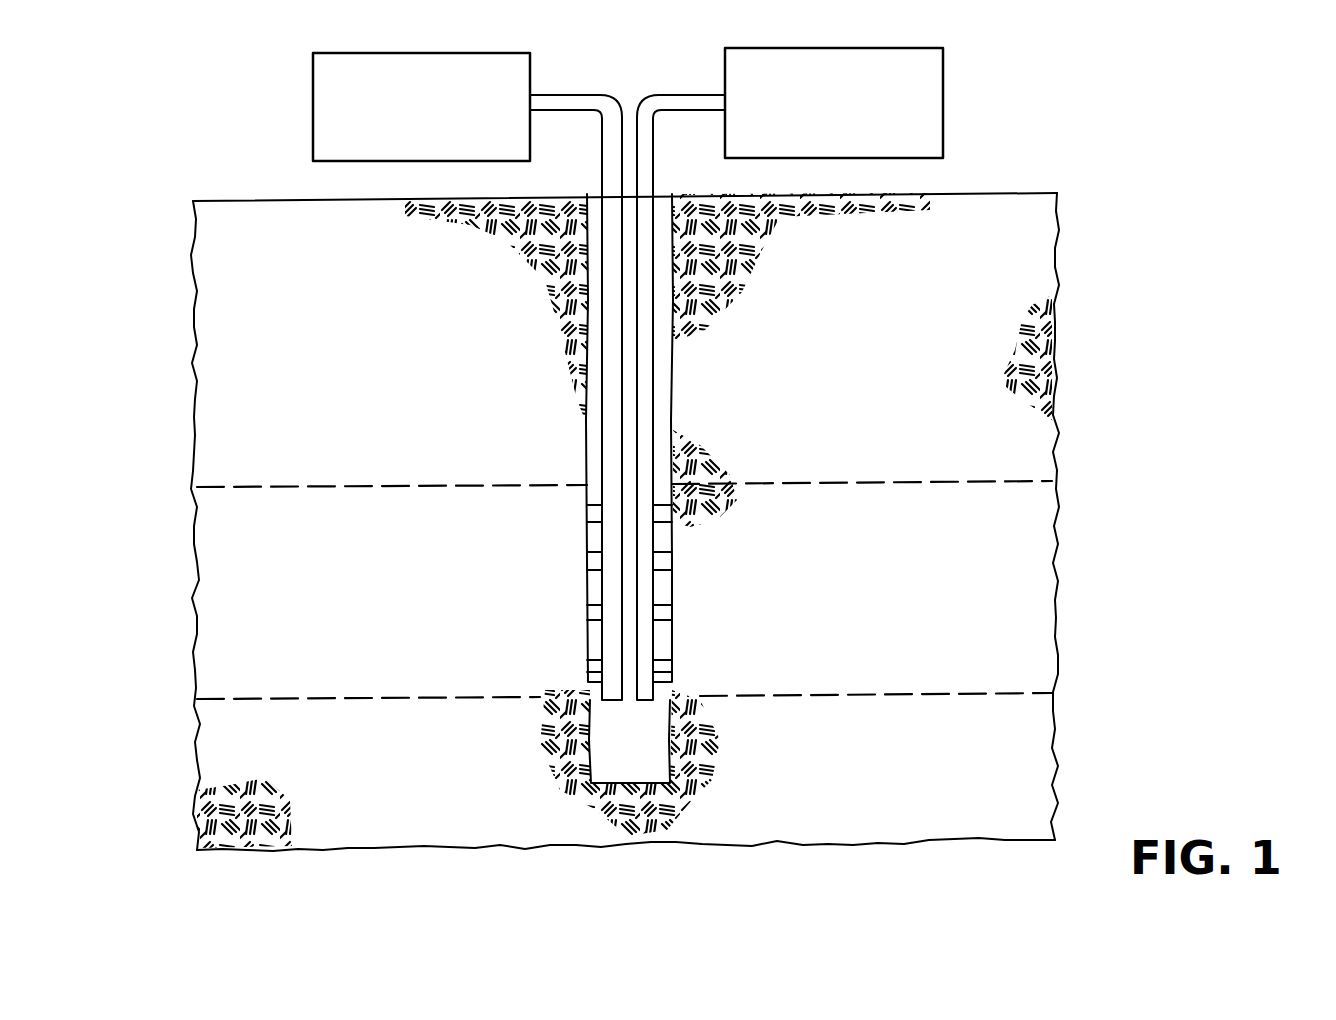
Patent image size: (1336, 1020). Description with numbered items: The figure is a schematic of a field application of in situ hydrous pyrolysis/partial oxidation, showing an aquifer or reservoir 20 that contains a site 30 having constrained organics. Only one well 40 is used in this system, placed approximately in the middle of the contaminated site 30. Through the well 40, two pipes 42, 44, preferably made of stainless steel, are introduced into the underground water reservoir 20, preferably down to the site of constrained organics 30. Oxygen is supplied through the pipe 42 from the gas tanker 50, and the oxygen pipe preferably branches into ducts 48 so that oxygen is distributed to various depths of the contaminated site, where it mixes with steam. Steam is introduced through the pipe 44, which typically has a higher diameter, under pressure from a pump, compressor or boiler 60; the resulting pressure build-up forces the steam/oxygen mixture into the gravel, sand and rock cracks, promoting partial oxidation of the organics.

The aquifer 20 is at (400, 603).
The site having constrained organics 30 is at (1075, 480).
The well 40 is at (660, 398).
The oxygen pipe 42 is at (672, 93).
The steam pipe 44 is at (580, 93).
The ducts 48 is at (668, 607).
The gas tanker 50 is at (944, 98).
The boiler 60 is at (313, 100).